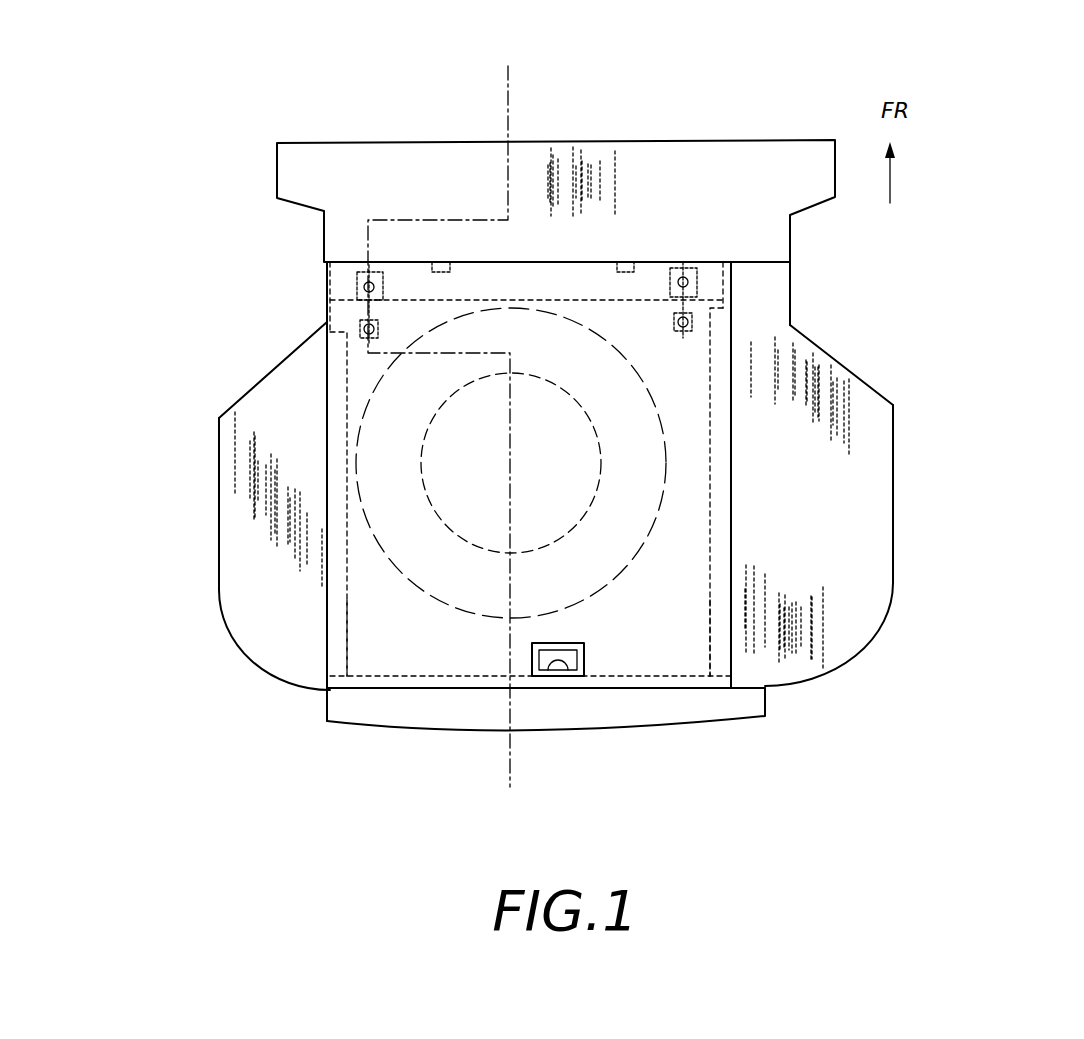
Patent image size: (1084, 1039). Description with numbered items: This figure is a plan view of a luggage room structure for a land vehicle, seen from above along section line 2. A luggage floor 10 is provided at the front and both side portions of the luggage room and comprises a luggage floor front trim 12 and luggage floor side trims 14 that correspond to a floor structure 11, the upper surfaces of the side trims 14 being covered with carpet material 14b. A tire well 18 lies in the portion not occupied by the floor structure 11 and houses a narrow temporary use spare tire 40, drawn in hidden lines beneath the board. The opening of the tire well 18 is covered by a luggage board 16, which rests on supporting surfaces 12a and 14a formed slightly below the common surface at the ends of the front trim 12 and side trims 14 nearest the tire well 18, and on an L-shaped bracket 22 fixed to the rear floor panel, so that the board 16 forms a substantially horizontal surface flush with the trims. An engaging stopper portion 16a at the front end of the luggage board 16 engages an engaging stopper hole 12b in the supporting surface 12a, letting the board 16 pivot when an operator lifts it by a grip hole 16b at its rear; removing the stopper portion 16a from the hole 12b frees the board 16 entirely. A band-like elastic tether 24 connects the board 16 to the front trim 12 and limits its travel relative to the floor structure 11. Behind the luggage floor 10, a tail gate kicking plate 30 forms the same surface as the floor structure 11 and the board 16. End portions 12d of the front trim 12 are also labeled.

The section line II-II 2 is at (507, 66).
The luggage floor 10 is at (270, 232).
The floor structure 11 is at (835, 292).
The luggage floor front trim 12 is at (683, 146).
The supporting surface 12a is at (548, 282).
The engaging stopper hole 12b is at (435, 266).
The cross member end portion 12d is at (352, 292).
The luggage floor side trims 14 is at (292, 676).
The supporting surface 14a is at (333, 692).
The carpet material 14b is at (250, 642).
The luggage board 16 is at (607, 688).
The engaging stopper portion 16a is at (447, 266).
The grip hole 16b is at (566, 668).
The tire well 18 is at (663, 663).
The L-shaped bracket 22 is at (518, 688).
The tether 24 is at (357, 310).
The tail gate kicking plate 30 is at (373, 722).
The temporary use spare tire 40 is at (357, 442).